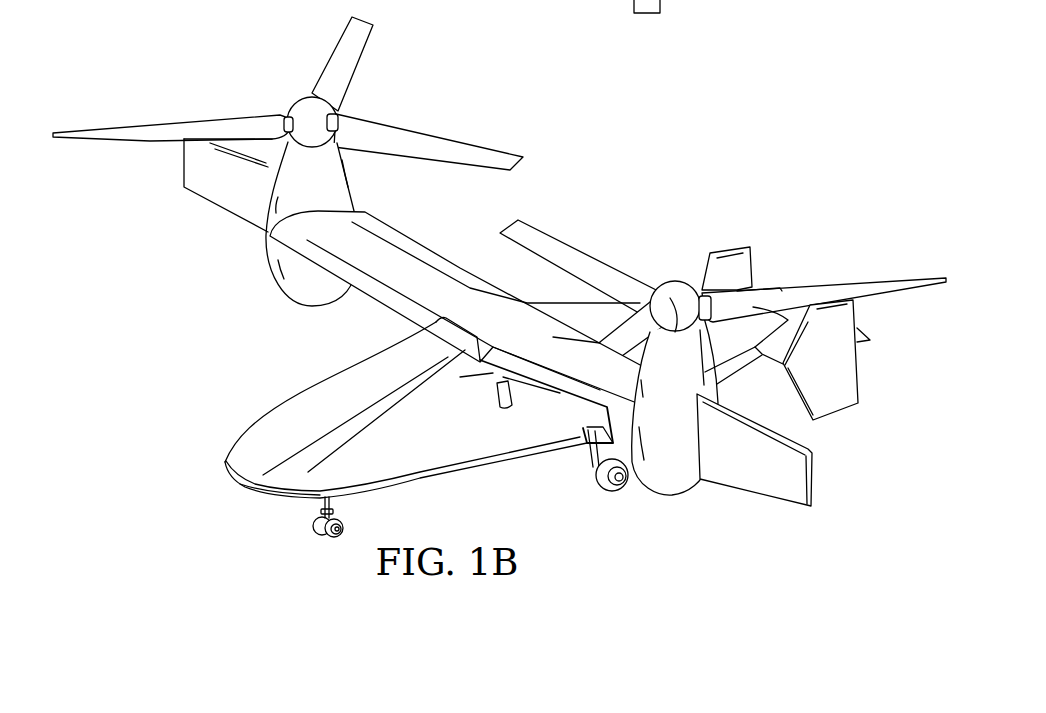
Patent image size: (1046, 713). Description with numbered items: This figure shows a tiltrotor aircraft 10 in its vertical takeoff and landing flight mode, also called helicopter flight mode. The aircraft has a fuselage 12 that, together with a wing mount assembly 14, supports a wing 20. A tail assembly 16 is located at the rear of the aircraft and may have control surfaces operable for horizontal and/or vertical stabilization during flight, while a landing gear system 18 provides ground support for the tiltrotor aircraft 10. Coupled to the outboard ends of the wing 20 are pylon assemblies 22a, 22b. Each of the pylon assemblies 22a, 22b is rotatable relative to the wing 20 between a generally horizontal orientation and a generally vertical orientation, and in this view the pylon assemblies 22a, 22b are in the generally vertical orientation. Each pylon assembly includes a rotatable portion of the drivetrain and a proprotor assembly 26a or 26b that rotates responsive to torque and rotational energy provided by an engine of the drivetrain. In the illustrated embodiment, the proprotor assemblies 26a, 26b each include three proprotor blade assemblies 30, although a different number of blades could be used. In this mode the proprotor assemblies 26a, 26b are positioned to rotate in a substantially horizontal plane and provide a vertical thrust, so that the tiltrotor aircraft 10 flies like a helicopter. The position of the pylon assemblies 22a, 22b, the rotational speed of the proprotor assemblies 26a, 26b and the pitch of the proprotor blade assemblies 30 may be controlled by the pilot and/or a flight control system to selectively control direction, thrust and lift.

The tiltrotor aircraft 10 is at (650, 128).
The fuselage 12 is at (270, 420).
The wing mount assembly 14 is at (438, 330).
The tail assembly 16 is at (862, 341).
The landing gear system 18 is at (333, 543).
The wing 20 is at (398, 262).
The pylon assembly 22a is at (688, 490).
The pylon assembly 22b is at (297, 304).
The proprotor assembly 26a is at (670, 277).
The proprotor assembly 26b is at (302, 95).
The proprotor blade assemblies 30 is at (138, 125).